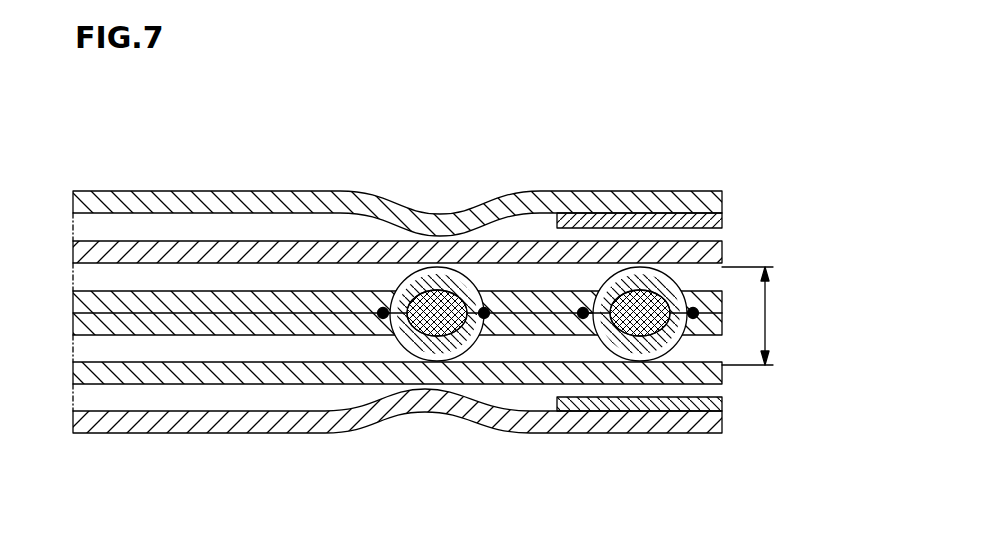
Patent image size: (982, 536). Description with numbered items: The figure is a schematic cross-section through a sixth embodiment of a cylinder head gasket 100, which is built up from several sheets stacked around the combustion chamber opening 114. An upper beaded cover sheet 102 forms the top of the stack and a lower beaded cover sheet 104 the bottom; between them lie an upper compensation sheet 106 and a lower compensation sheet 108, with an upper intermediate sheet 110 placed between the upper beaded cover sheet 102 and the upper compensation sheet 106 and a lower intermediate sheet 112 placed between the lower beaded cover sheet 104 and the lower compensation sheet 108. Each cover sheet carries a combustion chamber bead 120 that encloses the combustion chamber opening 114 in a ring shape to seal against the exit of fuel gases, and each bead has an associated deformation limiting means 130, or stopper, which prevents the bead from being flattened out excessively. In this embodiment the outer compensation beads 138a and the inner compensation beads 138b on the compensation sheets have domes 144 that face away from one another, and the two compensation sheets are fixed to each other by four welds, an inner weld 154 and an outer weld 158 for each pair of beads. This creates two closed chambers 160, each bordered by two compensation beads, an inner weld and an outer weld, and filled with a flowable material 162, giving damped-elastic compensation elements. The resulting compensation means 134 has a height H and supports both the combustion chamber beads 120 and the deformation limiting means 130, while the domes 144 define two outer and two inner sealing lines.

The cylinder head gasket 100 is at (94, 178).
The upper beaded cover sheet 102 is at (73, 190).
The lower beaded cover sheet 104 is at (123, 415).
The upper compensation sheet 106 is at (153, 292).
The lower compensation sheet 108 is at (173, 323).
The upper intermediate sheet 110 is at (183, 252).
The lower intermediate sheet 112 is at (247, 373).
The combustion chamber opening 114 is at (840, 342).
The combustion chamber bead 120 is at (435, 198).
The deformation limiting means 130 is at (724, 180).
The compensation means 134 is at (722, 372).
The outer compensation bead 138a is at (462, 258).
The inner compensation bead 138b is at (686, 266).
The dome 144 is at (396, 262).
The inner weld 154 is at (488, 308).
The outer weld 158 is at (383, 318).
The closed chamber 160 is at (358, 236).
The flowable material 162 is at (602, 283).